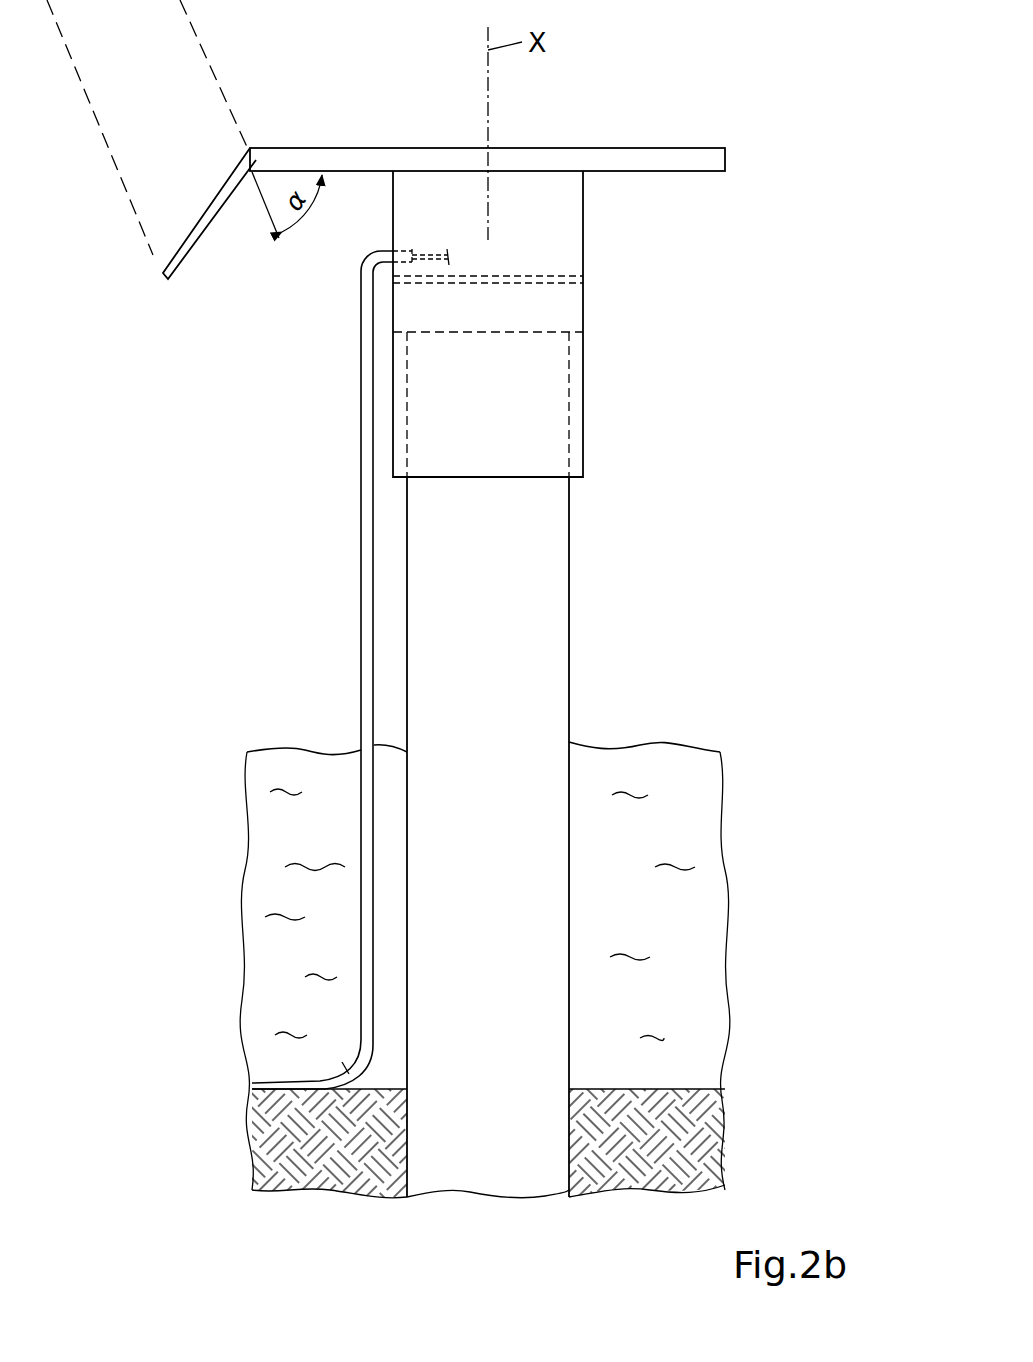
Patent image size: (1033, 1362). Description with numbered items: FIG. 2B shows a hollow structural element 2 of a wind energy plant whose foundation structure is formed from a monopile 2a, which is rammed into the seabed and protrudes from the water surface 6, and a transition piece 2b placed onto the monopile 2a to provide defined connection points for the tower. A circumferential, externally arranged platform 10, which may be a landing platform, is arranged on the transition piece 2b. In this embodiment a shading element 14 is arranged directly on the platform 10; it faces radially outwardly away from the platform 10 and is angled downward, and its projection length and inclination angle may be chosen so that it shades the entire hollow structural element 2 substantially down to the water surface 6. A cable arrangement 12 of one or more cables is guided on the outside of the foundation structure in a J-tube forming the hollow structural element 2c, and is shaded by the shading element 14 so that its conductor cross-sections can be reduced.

The hollow structural element 2 is at (513, 636).
The monopile 2a is at (570, 560).
The transition piece 2b is at (584, 248).
The J-tube 2c is at (368, 608).
The water surface 6 is at (665, 742).
The platform 10 is at (643, 160).
The cable arrangement 12 is at (430, 250).
The shading element 14 is at (187, 248).